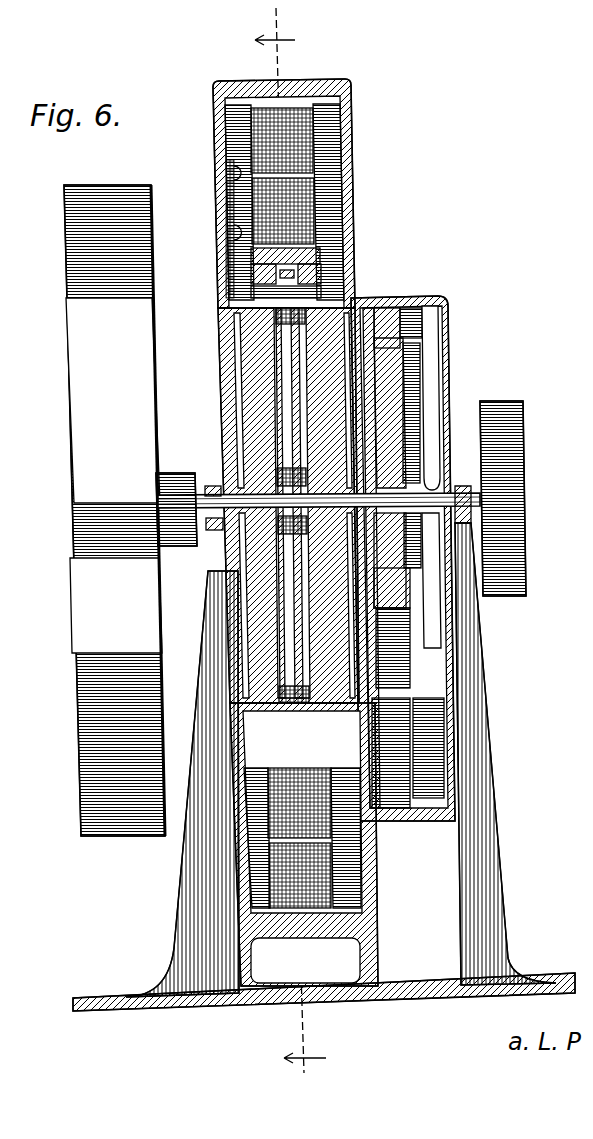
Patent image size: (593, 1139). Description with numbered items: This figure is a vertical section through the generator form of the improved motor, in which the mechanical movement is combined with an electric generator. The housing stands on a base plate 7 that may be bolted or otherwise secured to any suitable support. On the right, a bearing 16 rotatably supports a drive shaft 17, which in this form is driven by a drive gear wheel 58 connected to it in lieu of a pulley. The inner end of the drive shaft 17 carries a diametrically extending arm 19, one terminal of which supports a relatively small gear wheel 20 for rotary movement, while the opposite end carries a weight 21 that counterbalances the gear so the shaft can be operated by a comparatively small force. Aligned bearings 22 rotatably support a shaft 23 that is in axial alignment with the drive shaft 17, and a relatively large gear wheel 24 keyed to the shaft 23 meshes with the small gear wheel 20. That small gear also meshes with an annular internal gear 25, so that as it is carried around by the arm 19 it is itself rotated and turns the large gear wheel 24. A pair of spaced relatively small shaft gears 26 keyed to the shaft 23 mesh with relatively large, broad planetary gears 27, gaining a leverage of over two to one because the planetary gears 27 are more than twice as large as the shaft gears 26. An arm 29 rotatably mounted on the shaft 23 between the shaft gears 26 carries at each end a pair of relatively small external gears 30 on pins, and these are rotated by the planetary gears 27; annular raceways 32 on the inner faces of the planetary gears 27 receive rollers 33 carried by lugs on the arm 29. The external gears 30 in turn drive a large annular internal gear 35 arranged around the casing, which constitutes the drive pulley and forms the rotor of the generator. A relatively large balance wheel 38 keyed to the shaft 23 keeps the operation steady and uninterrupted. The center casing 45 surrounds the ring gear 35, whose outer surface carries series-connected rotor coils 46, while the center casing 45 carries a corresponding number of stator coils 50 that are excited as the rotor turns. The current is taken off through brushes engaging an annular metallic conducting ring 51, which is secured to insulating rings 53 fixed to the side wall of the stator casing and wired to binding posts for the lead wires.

The base plate 7 is at (290, 555).
The bearing 16 is at (452, 507).
The drive shaft 17 is at (457, 482).
The diametrically extending arm 19 is at (406, 410).
The relatively small gear wheel 20 is at (442, 315).
The weight 21 is at (392, 652).
The bearings 22 is at (206, 480).
The shaft 23 is at (203, 518).
The relatively large gear wheel 24 is at (380, 447).
The annular internal gear 25 is at (392, 792).
The shaft gears 26 is at (308, 465).
The planetary gears 27 is at (358, 302).
The arm 29 is at (284, 376).
The external gears 30 is at (314, 268).
The annular raceways 32 is at (270, 573).
The rollers 33 is at (345, 300).
The annular internal gear 35 is at (302, 247).
The balance wheel 38 is at (80, 180).
The center casing 45 is at (309, 78).
The rotor coils 46 is at (300, 200).
The stator coils 50 is at (346, 867).
The annular metallic electric conducting ring 51 is at (214, 160).
The insulating rings 53 is at (220, 214).
The drive gear wheel 58 is at (512, 442).